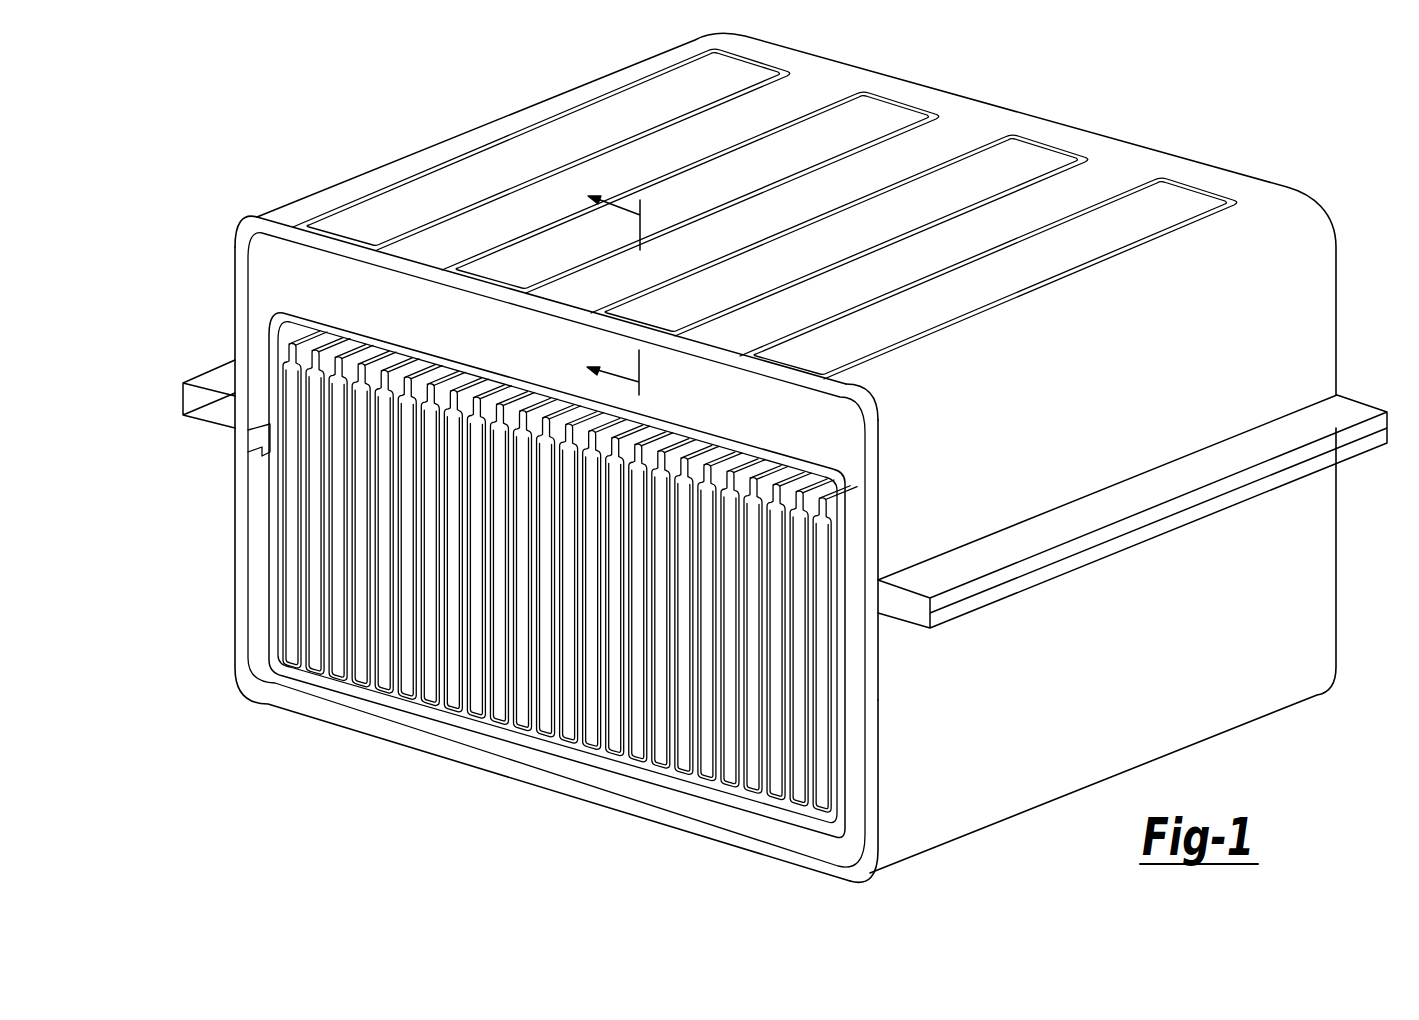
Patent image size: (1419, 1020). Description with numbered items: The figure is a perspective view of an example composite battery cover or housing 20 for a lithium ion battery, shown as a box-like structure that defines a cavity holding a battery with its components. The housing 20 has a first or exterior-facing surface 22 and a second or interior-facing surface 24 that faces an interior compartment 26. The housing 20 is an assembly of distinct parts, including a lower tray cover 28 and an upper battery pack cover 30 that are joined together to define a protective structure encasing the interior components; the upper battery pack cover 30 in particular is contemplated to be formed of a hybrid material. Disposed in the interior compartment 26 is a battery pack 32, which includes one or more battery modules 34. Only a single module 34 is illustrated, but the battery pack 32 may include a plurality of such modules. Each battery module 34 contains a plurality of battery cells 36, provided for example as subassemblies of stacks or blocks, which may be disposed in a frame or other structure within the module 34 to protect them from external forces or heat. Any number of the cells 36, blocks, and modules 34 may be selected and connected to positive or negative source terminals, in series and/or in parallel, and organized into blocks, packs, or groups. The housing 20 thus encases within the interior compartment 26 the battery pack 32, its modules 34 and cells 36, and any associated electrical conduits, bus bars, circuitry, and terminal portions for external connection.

The battery housing 20 is at (400, 157).
The exterior-facing surface 22 is at (551, 569).
The interior-facing surface 24 is at (263, 680).
The interior compartment 26 is at (570, 602).
The lower tray cover 28 is at (857, 868).
The upper battery pack cover 30 is at (862, 407).
The battery pack 32 is at (285, 297).
The battery module 34 is at (813, 437).
The battery cells 36 is at (752, 772).